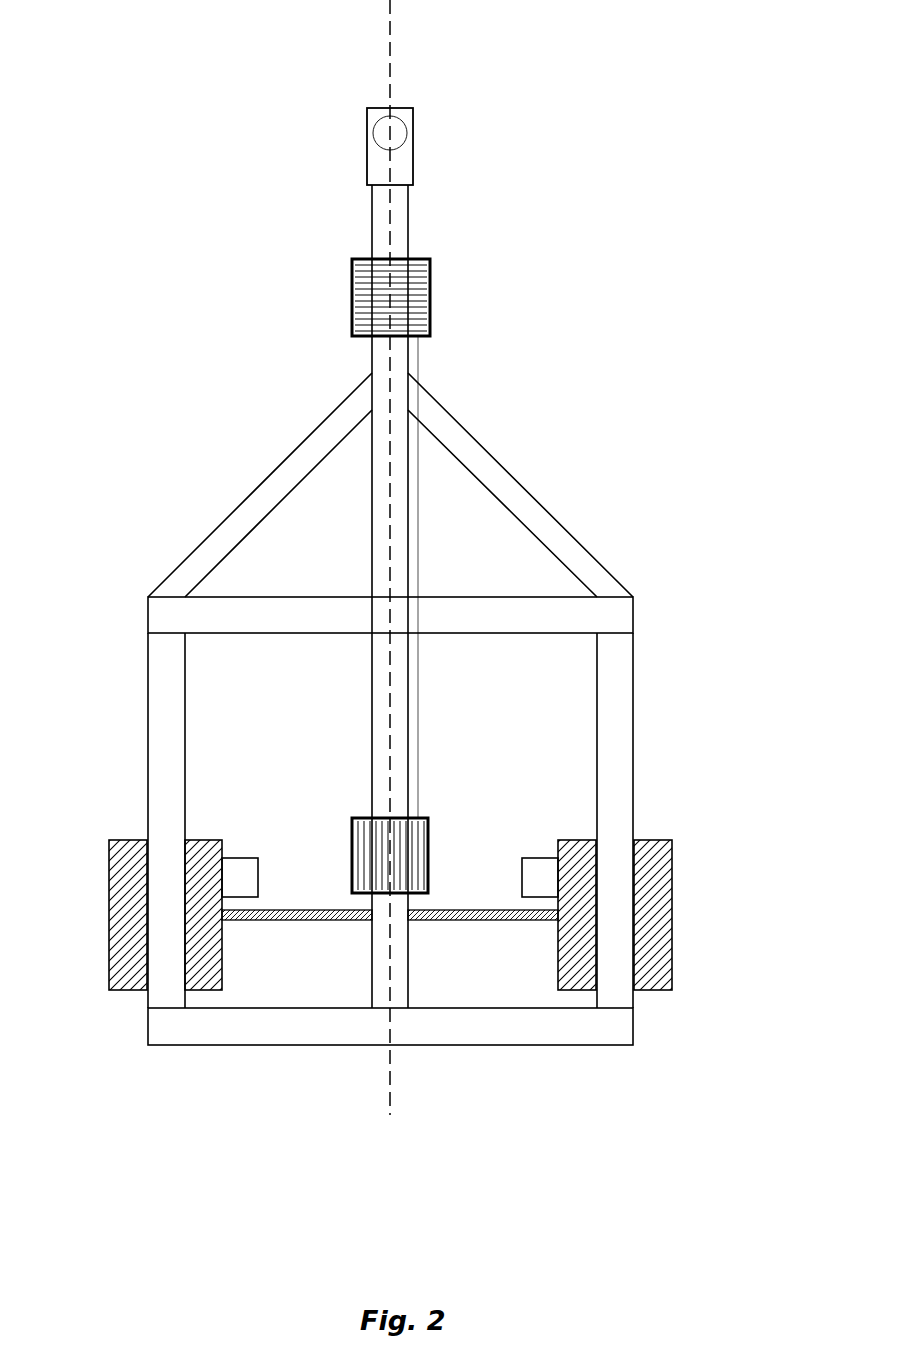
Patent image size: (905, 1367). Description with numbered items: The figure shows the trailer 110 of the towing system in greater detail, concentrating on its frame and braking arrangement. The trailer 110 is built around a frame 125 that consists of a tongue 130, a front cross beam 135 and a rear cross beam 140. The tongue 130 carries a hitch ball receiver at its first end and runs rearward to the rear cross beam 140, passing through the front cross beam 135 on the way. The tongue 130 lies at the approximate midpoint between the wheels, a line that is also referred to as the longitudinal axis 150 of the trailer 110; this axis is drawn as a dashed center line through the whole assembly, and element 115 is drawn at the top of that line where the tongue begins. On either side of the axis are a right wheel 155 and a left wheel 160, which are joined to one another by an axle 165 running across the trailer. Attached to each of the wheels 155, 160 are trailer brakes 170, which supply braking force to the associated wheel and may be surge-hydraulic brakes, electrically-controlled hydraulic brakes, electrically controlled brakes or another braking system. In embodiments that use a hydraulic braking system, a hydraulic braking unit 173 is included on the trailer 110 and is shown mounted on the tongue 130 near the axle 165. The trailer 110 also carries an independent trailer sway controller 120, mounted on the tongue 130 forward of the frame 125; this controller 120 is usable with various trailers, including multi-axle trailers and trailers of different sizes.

The trailer 110 is at (698, 101).
The motor / drive unit 115 is at (414, 163).
The independent trailer sway controller 120 is at (352, 335).
The frame 125 is at (530, 492).
The tongue 130 is at (371, 558).
The front cross beam 135 is at (148, 603).
The rear cross beam 140 is at (273, 1045).
The longitudinal axis 150 is at (391, 65).
The right wheel 155 is at (660, 840).
The left wheel 160 is at (120, 840).
The axle 165 is at (282, 910).
The trailer brakes 170 is at (240, 858).
The hydraulic braking unit 173 is at (428, 868).